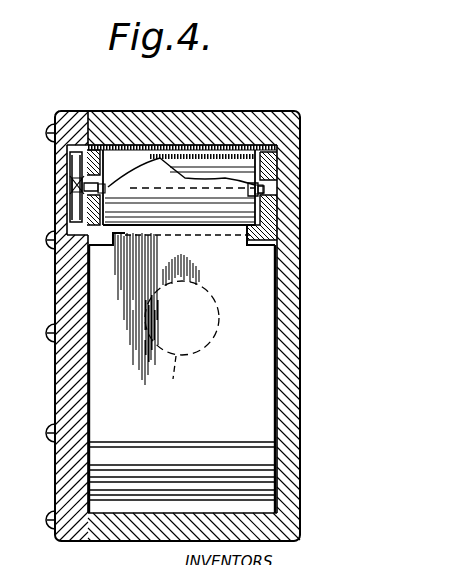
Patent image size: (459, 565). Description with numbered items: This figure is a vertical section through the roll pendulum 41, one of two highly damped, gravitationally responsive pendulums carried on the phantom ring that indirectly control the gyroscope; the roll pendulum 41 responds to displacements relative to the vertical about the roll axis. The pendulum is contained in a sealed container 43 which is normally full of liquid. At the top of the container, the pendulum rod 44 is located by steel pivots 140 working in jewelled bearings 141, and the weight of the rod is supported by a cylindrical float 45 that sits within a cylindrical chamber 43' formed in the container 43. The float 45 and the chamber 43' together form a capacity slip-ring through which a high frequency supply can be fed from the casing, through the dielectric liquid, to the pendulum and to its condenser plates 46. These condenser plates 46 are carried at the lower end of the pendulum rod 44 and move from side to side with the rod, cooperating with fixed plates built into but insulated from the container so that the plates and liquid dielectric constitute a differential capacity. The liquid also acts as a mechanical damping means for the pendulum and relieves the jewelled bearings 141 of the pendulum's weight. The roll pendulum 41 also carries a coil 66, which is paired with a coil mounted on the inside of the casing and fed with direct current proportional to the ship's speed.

The roll pendulum 41 is at (228, 368).
The sealed container 43 is at (222, 205).
The cylindrical chamber 43' is at (184, 114).
The pendulum rod 44 is at (228, 418).
The cylindrical float 45 is at (168, 150).
The condenser plates 46 is at (268, 467).
The coil 66 is at (167, 314).
The steel pivots 140 is at (104, 188).
The jewelled bearings 141 is at (66, 182).